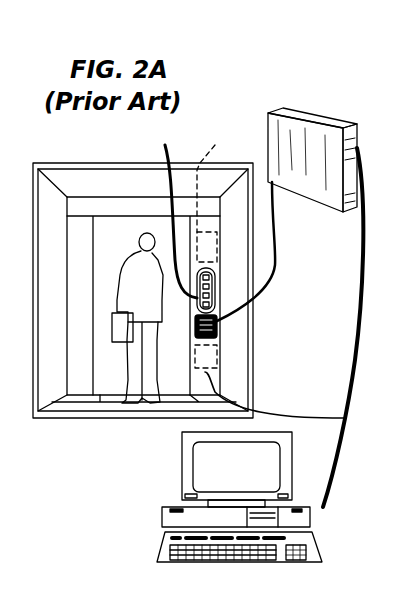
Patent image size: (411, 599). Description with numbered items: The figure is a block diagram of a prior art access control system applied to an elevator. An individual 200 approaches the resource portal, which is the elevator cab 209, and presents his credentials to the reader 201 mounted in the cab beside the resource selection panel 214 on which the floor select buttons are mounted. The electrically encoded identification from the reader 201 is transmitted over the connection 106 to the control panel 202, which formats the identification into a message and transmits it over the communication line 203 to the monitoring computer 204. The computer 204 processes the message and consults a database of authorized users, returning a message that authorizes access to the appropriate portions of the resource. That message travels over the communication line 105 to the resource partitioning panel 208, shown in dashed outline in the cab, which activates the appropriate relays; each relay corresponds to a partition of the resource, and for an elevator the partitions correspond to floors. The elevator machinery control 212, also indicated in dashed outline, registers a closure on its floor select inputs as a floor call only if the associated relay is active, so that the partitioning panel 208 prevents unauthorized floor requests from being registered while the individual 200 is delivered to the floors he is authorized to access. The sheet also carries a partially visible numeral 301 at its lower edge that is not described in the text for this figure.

The resource portal (elevator cab) 209 is at (105, 163).
The resource selection panel 214 is at (158, 212).
The elevator machinery control 212 is at (223, 247).
The control panel 202 is at (337, 117).
The connection 106 is at (278, 270).
The reader 201 is at (218, 330).
The resource partitioning panel 208 is at (217, 367).
The communication line 105 is at (297, 415).
The individual 200 is at (138, 404).
The monitoring computer 204 is at (163, 510).
The communication line 203 is at (344, 465).
The reference 301 is at (402, 590).